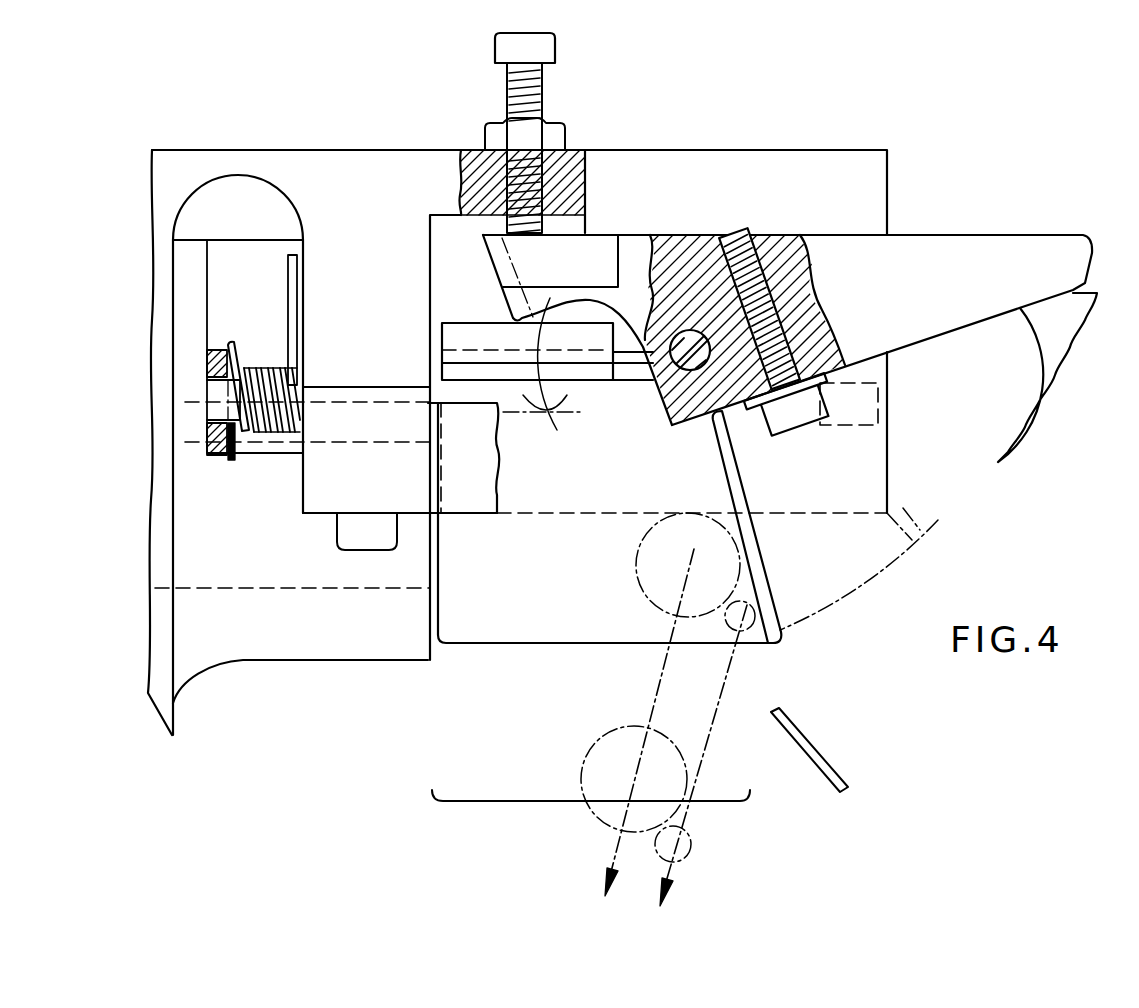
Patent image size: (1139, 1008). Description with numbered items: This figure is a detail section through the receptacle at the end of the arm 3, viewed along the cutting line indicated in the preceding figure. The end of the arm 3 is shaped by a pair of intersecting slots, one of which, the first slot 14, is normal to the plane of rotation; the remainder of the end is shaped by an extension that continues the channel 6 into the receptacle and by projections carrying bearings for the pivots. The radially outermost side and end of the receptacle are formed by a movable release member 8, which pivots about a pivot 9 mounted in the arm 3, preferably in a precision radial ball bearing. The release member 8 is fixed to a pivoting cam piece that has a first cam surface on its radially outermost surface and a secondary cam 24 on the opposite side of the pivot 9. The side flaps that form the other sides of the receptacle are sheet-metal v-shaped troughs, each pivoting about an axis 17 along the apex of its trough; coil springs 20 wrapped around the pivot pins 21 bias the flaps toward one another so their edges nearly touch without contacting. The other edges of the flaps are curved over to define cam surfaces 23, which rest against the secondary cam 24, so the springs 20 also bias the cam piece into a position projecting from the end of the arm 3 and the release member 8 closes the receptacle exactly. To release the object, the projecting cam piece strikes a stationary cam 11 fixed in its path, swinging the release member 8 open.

The arm 3 is at (207, 158).
The channel 6 is at (262, 590).
The release member 8 is at (975, 252).
The pivot 9 is at (672, 410).
The stationary cam 11 is at (978, 415).
The first slot 14 is at (640, 709).
The axis 17 is at (186, 430).
The coil spring 20 is at (256, 372).
The pivot pin 21 is at (256, 431).
The cam surface 23 is at (468, 323).
The secondary cam 24 is at (527, 320).